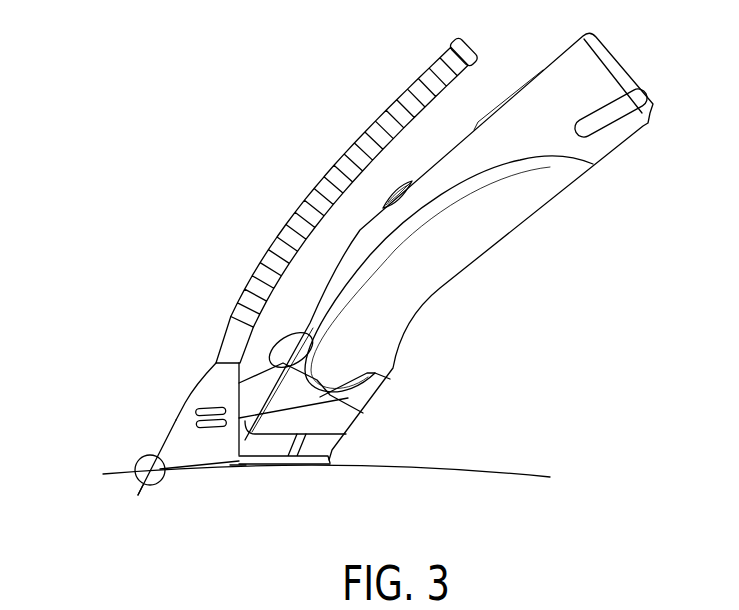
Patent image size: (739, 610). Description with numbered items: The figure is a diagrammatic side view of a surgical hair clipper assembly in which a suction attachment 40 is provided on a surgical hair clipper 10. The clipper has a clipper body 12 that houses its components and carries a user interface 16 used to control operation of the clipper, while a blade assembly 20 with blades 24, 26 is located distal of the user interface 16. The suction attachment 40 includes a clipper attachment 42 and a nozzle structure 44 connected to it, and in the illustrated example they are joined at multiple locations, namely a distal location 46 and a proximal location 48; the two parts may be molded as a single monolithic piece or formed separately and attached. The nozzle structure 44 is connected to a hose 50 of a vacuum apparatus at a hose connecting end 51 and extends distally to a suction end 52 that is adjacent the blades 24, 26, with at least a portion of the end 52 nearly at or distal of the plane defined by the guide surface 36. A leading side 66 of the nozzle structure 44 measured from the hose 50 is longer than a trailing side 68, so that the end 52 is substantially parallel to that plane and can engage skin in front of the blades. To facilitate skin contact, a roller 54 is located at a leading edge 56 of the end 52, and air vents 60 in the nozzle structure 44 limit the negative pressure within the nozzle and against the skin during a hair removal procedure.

The surgical hair clipper 10 is at (389, 309).
The clipper body 12 is at (532, 100).
The user interface 16 is at (408, 192).
The blade assembly 20 is at (308, 476).
The blade 24 is at (215, 529).
The blade 26 is at (238, 498).
The guide surface 36 is at (290, 466).
The suction attachment 40 is at (201, 405).
The clipper attachment 42 is at (346, 425).
The nozzle structure 44 is at (175, 443).
The distal location 46 is at (237, 457).
The proximal location 48 is at (305, 350).
The hose 50 is at (330, 168).
The hose connecting end 51 is at (223, 340).
The suction end 52 is at (187, 463).
The roller 54 is at (134, 463).
The leading edge 56 is at (148, 480).
The air vents 60 is at (205, 405).
The leading side 66 is at (188, 398).
The trailing side 68 is at (392, 379).